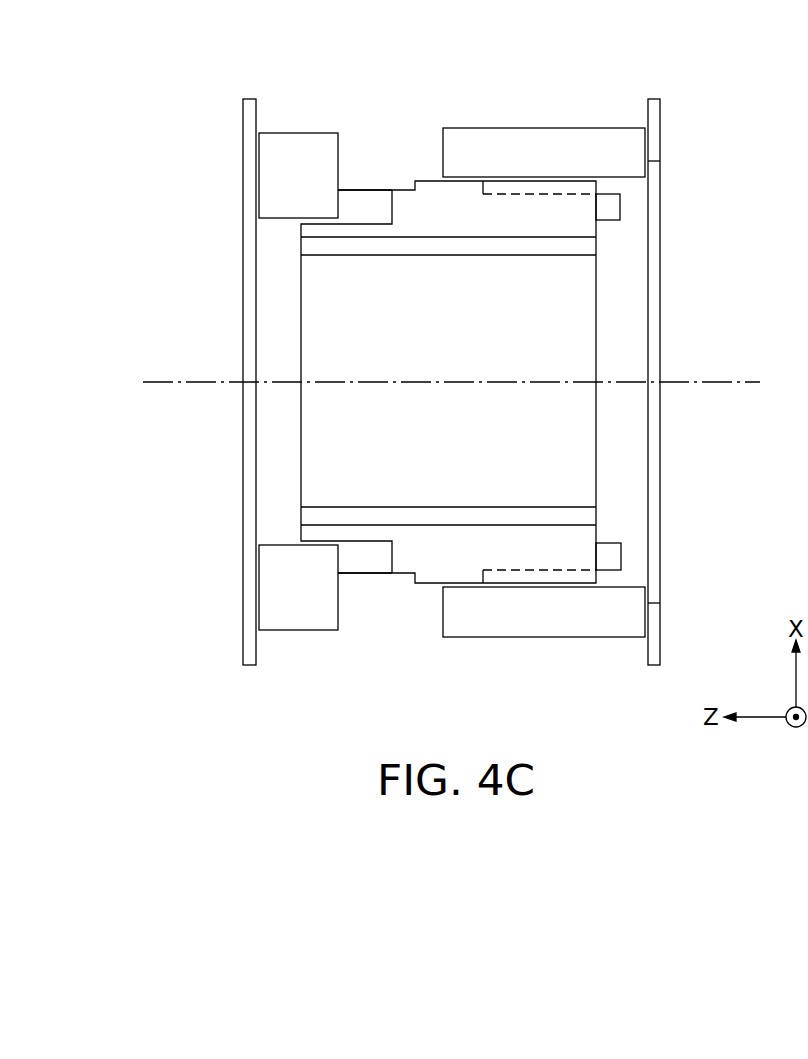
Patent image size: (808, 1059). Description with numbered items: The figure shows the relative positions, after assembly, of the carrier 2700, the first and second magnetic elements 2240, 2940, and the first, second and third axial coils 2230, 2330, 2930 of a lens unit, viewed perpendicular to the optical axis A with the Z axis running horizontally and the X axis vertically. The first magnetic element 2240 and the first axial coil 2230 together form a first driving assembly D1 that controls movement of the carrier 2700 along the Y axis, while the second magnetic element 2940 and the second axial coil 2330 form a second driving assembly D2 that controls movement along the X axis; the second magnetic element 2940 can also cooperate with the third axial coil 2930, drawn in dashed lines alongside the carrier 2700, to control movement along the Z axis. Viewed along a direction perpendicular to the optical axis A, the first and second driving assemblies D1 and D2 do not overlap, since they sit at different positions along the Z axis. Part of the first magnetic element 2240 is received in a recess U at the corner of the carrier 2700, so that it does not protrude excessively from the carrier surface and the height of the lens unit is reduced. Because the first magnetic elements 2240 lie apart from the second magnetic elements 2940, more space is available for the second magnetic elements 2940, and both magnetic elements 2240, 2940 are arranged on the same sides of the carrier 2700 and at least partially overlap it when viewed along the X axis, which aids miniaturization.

The first axial coil 2230 is at (250, 458).
The first magnetic element 2240 is at (298, 157).
The second axial coil 2330 is at (654, 454).
The second magnetic element 2940 is at (478, 152).
The third axial coil 2930 is at (565, 190).
The carrier 2700 is at (357, 308).
The recess U is at (365, 207).
The optical axis A is at (734, 380).
The first driving assembly D1 is at (93, 33).
The second driving assembly D2 is at (93, 120).